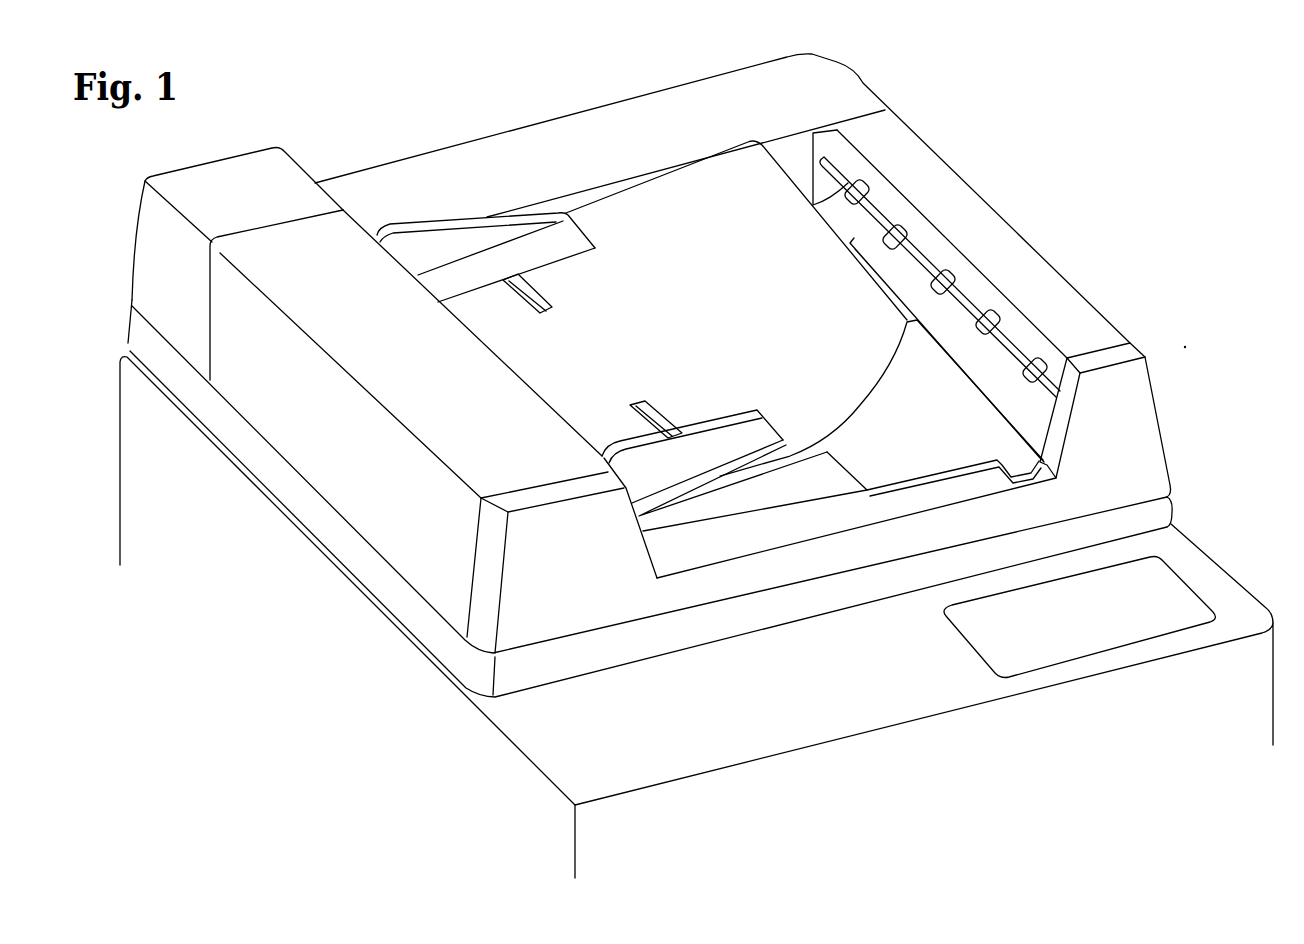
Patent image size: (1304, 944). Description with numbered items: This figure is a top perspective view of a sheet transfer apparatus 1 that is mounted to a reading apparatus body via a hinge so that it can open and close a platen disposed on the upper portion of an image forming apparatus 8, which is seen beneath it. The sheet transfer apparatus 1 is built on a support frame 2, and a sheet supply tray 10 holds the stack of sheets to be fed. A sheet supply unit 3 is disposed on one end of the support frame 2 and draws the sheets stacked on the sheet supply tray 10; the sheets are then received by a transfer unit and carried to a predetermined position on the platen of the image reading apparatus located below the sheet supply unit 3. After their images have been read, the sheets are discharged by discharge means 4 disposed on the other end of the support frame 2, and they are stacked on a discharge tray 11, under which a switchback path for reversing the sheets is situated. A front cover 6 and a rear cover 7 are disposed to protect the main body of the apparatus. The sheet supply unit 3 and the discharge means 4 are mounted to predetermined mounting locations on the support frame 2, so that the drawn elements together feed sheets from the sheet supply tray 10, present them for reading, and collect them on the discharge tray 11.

The sheet transfer apparatus 1 is at (663, 375).
The support frame 2 is at (696, 617).
The sheet supply unit 3 is at (508, 395).
The discharge means 4 is at (1037, 265).
The front cover 6 is at (1150, 435).
The rear cover 7 is at (855, 98).
The image forming apparatus 8 is at (1207, 567).
The sheet supply tray 10 is at (679, 218).
The discharge tray 11 is at (902, 462).